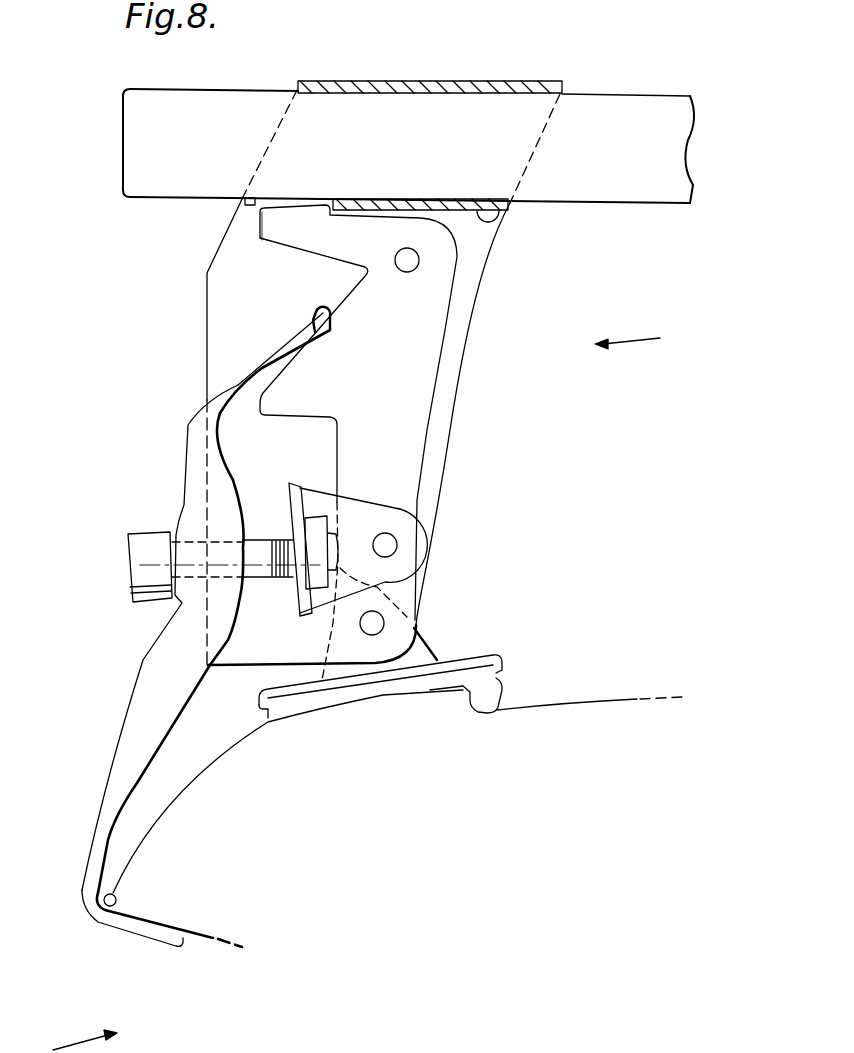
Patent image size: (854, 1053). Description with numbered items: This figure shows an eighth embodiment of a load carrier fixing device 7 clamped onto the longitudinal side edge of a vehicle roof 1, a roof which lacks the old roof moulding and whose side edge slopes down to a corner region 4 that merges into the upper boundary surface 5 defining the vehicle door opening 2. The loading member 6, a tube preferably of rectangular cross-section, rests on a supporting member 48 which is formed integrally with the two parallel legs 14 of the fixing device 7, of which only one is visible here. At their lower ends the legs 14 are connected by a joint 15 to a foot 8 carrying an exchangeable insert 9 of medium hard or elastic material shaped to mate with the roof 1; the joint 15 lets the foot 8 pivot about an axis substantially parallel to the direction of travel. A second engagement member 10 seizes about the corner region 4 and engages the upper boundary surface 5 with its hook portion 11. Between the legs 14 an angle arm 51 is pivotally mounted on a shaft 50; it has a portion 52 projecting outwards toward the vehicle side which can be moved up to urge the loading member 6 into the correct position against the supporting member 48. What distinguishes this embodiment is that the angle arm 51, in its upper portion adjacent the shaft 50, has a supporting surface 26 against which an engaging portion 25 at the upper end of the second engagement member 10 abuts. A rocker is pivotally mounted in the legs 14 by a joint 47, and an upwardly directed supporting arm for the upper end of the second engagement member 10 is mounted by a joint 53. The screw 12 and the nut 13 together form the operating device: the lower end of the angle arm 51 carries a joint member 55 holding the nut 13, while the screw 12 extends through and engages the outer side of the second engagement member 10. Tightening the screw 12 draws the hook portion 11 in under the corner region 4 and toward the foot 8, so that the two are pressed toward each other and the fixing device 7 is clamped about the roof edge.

The vehicle roof 1 is at (607, 700).
The vehicle door opening 2 is at (85, 1033).
The corner region 4 is at (108, 917).
The upper boundary surface 5 is at (197, 935).
The loading member 6 is at (255, 75).
The fixing device 7 is at (639, 347).
The foot 8 is at (457, 660).
The exchangeable insert 9 is at (502, 695).
The second engagement member 10 is at (147, 678).
The hook portion 11 is at (147, 933).
The screw 12 is at (148, 538).
The nut 13 is at (313, 518).
The legs 14 is at (442, 418).
The joint 15 is at (372, 623).
The engaging portion 25 is at (310, 307).
The supporting surface 26 is at (295, 362).
The joint 47 is at (497, 222).
The supporting member 48 is at (409, 82).
The shaft 50 is at (407, 260).
The angle arm 51 is at (423, 368).
The projecting portion 52 is at (270, 225).
The joint 53 is at (393, 548).
The joint member 55 is at (390, 518).